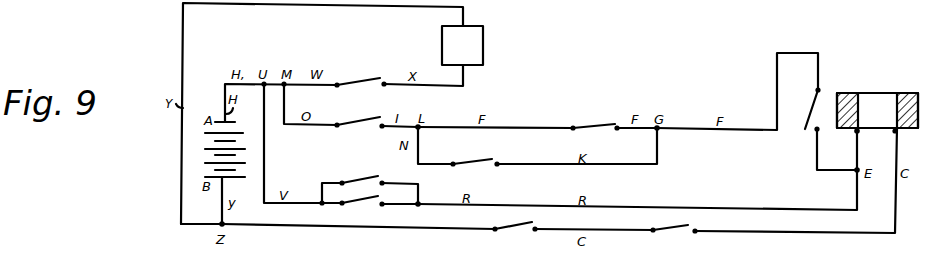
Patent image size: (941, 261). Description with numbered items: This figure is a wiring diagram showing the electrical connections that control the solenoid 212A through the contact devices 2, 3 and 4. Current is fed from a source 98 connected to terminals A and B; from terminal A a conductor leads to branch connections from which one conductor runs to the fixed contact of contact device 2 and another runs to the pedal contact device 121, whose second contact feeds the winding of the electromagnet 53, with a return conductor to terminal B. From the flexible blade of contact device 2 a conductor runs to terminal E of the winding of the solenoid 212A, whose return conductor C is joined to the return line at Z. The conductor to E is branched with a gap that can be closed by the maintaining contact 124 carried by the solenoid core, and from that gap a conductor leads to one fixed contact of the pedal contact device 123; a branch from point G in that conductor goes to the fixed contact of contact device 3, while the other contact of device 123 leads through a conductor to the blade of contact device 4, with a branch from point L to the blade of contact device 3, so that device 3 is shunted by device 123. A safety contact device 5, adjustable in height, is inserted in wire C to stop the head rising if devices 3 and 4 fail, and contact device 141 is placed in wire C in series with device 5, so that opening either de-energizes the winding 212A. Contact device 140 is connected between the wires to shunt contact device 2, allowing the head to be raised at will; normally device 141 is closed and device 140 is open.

The electromagnet 53 is at (462, 45).
The source 98 is at (218, 155).
The pedal contact device 121 is at (358, 74).
The contact device 4 is at (358, 114).
The pedal contact device 123 is at (594, 119).
The contact device 3 is at (472, 155).
The contact device 140 is at (360, 175).
The contact device 2 is at (360, 207).
The contact device 141 is at (513, 235).
The safety contact device 5 is at (670, 236).
The maintaining contact 124 is at (801, 109).
The solenoid 212A is at (877, 102).